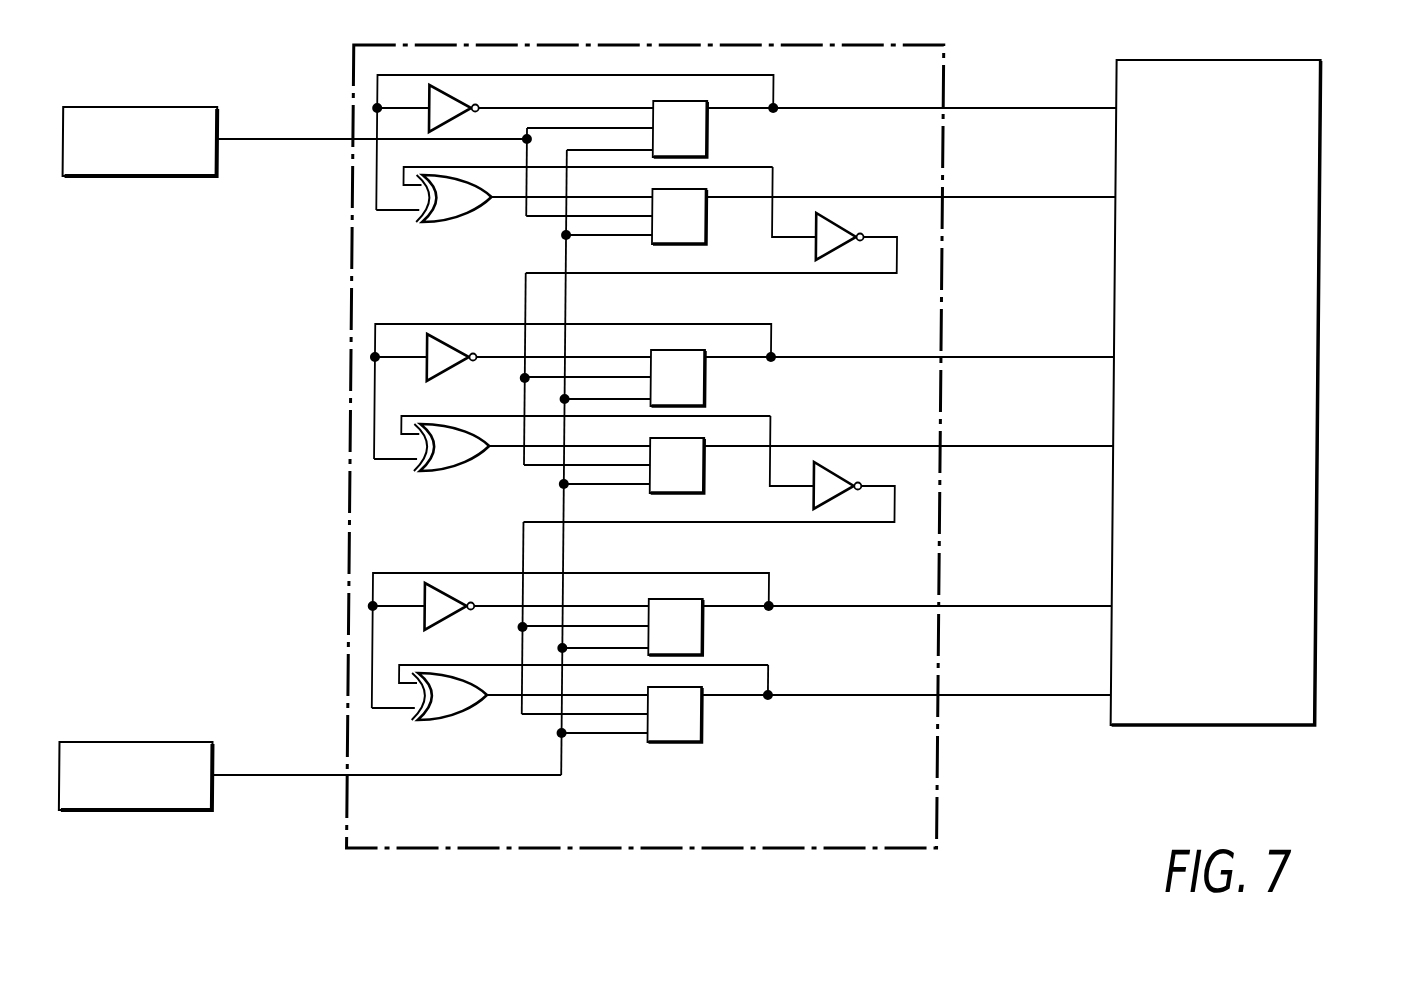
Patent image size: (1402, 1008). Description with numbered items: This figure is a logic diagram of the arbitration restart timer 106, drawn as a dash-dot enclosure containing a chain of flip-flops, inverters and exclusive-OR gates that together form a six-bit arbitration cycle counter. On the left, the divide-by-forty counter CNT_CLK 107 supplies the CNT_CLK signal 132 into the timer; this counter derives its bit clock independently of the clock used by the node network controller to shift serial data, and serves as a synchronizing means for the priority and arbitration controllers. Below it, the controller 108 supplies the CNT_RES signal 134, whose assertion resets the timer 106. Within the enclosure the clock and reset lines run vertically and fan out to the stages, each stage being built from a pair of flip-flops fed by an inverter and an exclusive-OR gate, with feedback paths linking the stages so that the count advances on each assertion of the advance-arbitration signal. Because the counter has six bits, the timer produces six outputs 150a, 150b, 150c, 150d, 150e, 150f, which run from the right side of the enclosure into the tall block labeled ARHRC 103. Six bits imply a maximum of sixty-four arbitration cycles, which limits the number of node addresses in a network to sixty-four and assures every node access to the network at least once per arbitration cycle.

The ARHRC 103 is at (1320, 147).
The arbitration restart timer 106 is at (947, 818).
The divide-by-40 counter CNT_CLK 107 is at (98, 107).
The controller 108 is at (100, 742).
The CNT_CLK signal 132 is at (278, 141).
The CNT_RES signal 134 is at (272, 777).
The output 150a is at (1007, 108).
The output 150b is at (1006, 197).
The output 150c is at (1005, 357).
The output 150d is at (1005, 446).
The output 150e is at (1004, 606).
The output 150f is at (1004, 695).